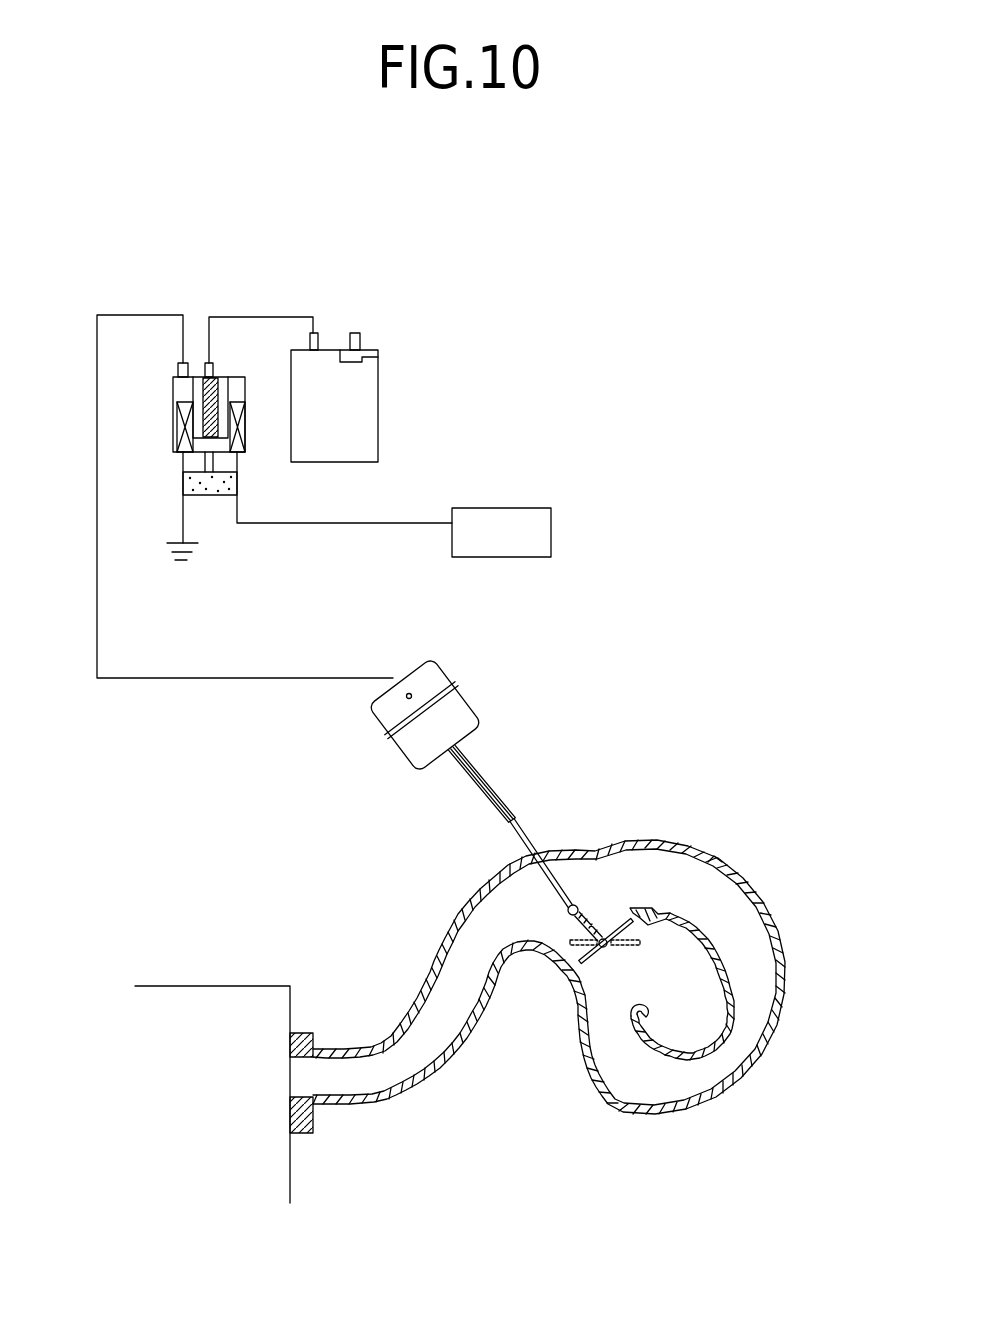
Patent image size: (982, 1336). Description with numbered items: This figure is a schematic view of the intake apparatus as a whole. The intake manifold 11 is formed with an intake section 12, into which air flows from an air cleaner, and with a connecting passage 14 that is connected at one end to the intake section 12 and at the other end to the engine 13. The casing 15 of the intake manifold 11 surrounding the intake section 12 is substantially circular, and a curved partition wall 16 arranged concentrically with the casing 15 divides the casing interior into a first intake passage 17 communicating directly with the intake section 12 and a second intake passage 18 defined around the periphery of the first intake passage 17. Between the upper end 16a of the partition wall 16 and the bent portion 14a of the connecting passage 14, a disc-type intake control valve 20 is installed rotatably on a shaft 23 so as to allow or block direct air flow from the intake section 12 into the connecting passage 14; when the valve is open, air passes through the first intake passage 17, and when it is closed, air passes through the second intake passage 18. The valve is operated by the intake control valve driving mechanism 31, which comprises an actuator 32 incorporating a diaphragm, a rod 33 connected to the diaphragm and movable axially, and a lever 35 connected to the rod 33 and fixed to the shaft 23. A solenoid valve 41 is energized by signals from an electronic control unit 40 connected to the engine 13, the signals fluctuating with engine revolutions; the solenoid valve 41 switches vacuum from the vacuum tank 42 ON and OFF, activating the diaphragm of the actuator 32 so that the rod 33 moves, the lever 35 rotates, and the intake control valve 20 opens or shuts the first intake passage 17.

The intake manifold 11 is at (583, 986).
The intake section 12 is at (705, 1010).
The engine 13 is at (257, 995).
The connecting passage 14 is at (415, 1070).
The bent portion 14a is at (550, 975).
The casing 15 is at (763, 1073).
The partition wall 16 is at (720, 960).
The upper end 16a is at (648, 908).
The first intake passage 17 is at (653, 953).
The second intake passage 18 is at (715, 1073).
The intake control valve 20 is at (588, 960).
The shaft 23 is at (604, 948).
The intake control valve driving mechanism 31 is at (479, 756).
The actuator 32 is at (437, 673).
The rod 33 is at (512, 832).
The lever 35 is at (577, 903).
The electronic control unit 40 is at (525, 528).
The solenoid valve 41 is at (192, 387).
The vacuum tank 42 is at (370, 417).